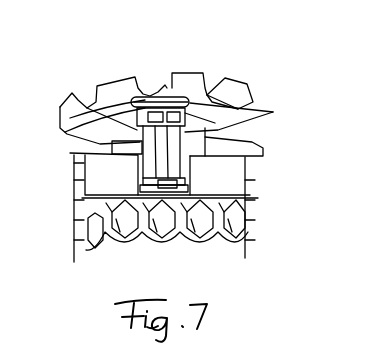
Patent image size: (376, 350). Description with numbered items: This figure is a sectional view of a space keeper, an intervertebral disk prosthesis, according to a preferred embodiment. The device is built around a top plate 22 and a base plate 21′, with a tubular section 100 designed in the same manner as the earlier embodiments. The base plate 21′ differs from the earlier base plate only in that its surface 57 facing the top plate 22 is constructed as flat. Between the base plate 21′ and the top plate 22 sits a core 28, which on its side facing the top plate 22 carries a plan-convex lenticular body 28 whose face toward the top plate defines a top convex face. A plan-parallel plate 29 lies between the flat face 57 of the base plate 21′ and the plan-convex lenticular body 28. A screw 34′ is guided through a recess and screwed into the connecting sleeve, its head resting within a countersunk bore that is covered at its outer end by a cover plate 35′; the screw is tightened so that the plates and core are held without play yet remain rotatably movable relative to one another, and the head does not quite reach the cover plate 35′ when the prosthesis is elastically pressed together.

The top plate 22 is at (202, 108).
The cover plate 35′ is at (152, 94).
The screw 34′ is at (207, 93).
The core 28 is at (243, 137).
The base plate 21′ is at (255, 175).
The plan-parallel plate 29 is at (80, 151).
The flat face 57 is at (73, 168).
The tubular section 100 is at (258, 230).